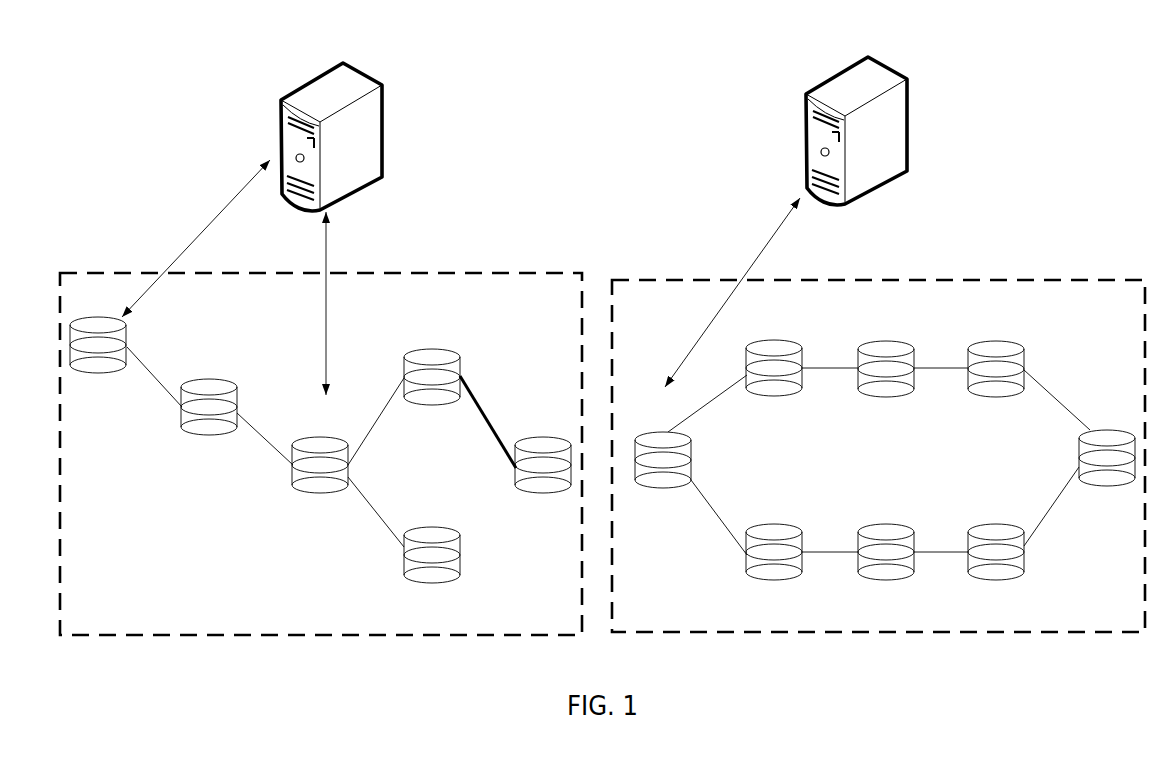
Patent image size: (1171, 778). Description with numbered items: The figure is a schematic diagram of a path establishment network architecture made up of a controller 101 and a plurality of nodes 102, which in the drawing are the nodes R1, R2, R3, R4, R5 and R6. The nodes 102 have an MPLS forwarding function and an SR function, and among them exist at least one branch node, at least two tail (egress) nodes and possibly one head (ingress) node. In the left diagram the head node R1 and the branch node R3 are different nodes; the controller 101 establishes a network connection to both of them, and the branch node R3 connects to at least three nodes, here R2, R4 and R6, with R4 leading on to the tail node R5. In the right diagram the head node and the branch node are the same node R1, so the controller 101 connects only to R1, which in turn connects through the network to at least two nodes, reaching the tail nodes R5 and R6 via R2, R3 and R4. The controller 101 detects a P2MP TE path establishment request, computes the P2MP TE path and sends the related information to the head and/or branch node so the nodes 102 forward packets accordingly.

The controller 101 is at (383, 137).
The nodes 102 is at (512, 273).
The node R1 is at (382, 420).
The node R2 is at (491, 374).
The node R3 is at (600, 436).
The node R4 is at (714, 355).
The node R5 is at (825, 474).
The node R6 is at (714, 555).